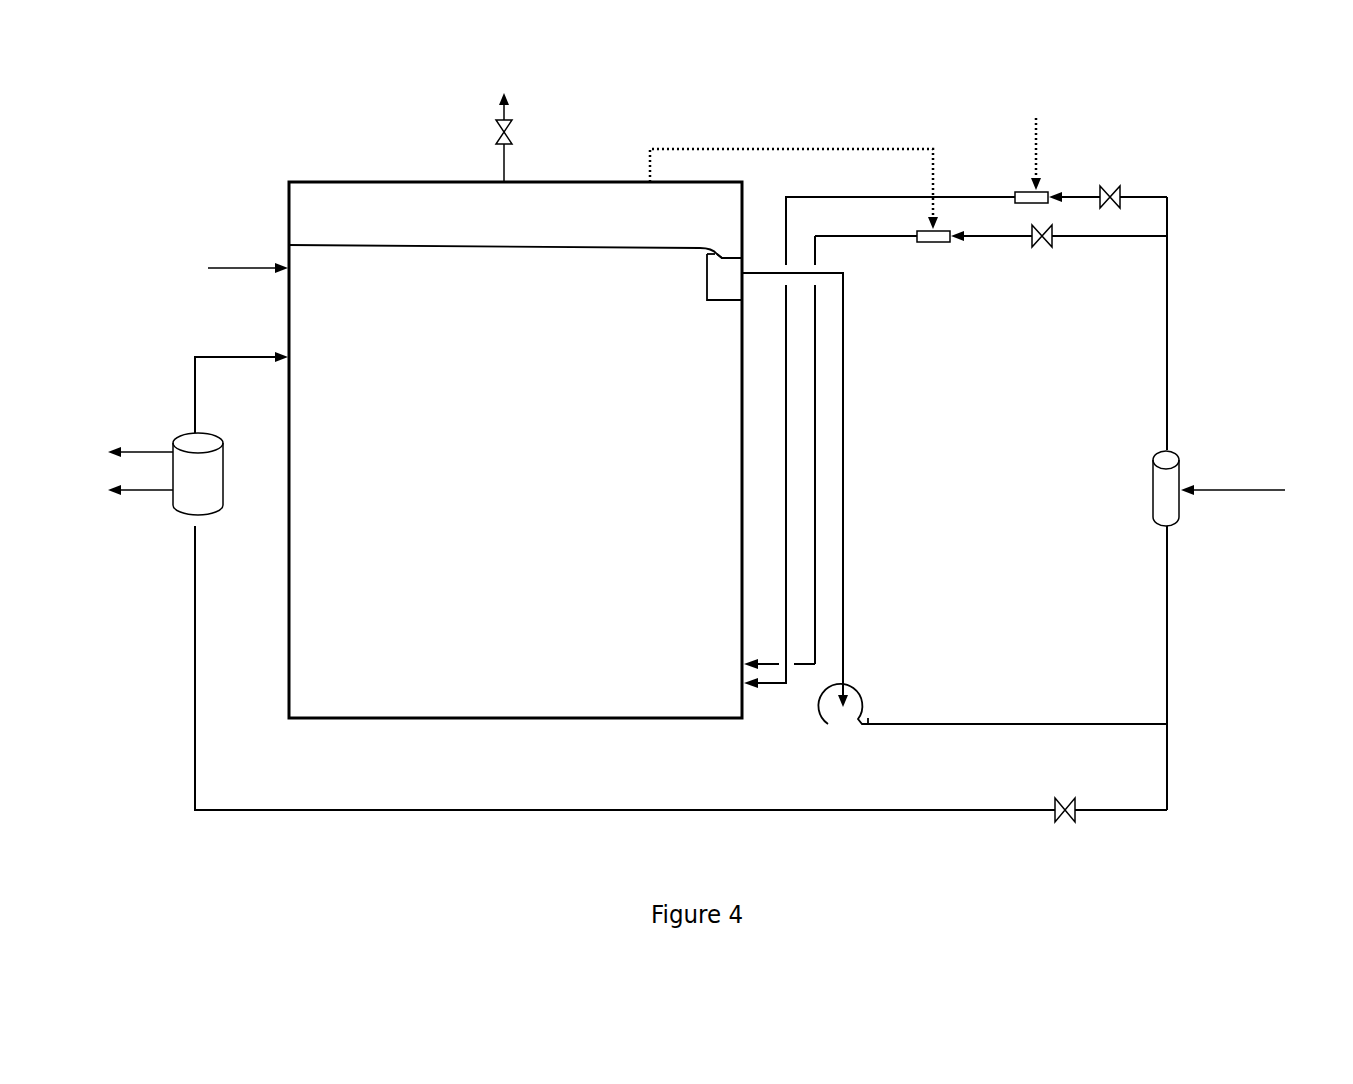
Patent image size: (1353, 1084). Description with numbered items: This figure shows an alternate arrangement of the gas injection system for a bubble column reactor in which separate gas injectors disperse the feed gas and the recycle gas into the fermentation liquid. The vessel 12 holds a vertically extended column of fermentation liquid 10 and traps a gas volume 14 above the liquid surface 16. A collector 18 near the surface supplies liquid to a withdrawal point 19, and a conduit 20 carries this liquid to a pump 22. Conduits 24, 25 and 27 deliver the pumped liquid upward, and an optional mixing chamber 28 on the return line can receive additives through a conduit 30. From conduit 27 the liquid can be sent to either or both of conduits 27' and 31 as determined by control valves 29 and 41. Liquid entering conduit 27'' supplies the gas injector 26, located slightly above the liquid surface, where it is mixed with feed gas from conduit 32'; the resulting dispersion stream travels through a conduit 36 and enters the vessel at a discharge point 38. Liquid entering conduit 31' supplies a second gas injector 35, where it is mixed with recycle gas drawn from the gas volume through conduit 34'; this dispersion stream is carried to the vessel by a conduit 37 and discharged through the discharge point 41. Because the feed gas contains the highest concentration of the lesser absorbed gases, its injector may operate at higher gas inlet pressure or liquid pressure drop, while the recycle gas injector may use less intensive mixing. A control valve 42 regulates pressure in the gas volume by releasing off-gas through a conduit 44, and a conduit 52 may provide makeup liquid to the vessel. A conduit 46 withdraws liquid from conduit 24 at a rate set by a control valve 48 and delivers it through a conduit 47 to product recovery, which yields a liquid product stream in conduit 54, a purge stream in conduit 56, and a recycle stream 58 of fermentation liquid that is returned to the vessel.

The fermentation liquid 10 is at (497, 482).
The vessel 12 is at (285, 616).
The gas volume 14 is at (580, 222).
The liquid surface 16 is at (418, 245).
The collector 18 is at (720, 301).
The withdrawal point 19 is at (744, 262).
The conduit 20 is at (846, 440).
The pump 22 is at (830, 724).
The conduit 24 is at (935, 722).
The conduit 25 is at (1172, 632).
The gas injector 26 is at (1048, 190).
The conduit 27 is at (1199, 343).
The conduit 27' is at (1203, 215).
The conduit 27'' is at (1132, 155).
The mixing chamber 28 is at (1182, 473).
The control valve 29 is at (1121, 190).
The conduit 30 is at (1249, 491).
The conduit 31 is at (1109, 266).
The conduit 31' is at (996, 264).
The conduit 32' is at (1001, 142).
The conduit 34' is at (794, 162).
The gas injector 35 is at (937, 244).
The conduit 36 is at (942, 197).
The conduit 37 is at (846, 238).
The discharge point 38 is at (741, 681).
The control valve / discharge point 41 is at (1048, 250).
The control valve 42 is at (495, 130).
The conduit 44 is at (508, 106).
The conduit 46 is at (1170, 770).
The conduit 47 is at (440, 812).
The control valve 48 is at (1058, 824).
The conduit 52 is at (255, 269).
The conduit 54 is at (141, 450).
The conduit 56 is at (152, 493).
The recycle stream 58 is at (272, 358).